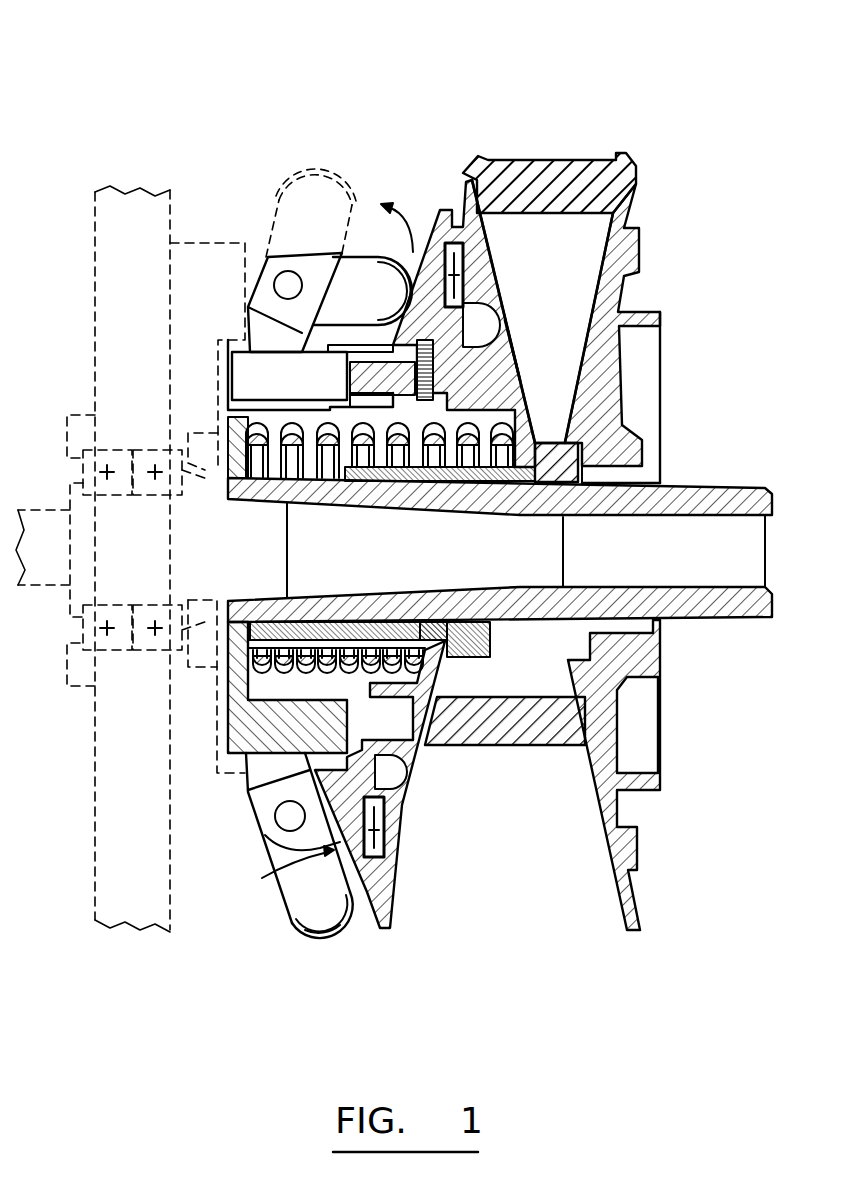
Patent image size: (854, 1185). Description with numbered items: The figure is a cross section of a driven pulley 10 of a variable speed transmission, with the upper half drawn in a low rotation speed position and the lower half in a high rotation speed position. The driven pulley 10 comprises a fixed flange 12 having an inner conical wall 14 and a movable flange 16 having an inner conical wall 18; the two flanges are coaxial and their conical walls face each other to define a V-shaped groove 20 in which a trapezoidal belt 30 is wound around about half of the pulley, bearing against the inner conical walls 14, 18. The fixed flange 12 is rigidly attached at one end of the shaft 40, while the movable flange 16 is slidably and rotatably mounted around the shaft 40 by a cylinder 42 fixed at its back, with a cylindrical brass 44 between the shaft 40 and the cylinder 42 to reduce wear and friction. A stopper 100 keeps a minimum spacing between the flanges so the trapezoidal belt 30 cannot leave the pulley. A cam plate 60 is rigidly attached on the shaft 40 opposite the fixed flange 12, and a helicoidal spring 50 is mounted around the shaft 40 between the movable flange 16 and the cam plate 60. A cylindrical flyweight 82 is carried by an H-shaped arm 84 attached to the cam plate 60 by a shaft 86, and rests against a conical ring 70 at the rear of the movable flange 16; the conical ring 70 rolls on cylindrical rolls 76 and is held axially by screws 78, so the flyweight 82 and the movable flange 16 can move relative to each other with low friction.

The driven pulley 10 is at (573, 72).
The fixed flange 12 is at (640, 180).
The inner conical wall 14 is at (618, 270).
The movable flange 16 is at (450, 210).
The inner conical wall 18 is at (513, 314).
The V-shaped groove 20 is at (567, 362).
The trapezoidal belt 30 is at (537, 160).
The shaft 40 is at (770, 488).
The cylinder 42 is at (460, 481).
The cylindrical brass 44 is at (443, 597).
The helicoidal spring 50 is at (318, 470).
The cam plate 60 is at (222, 640).
The conical ring 70 is at (418, 245).
The cylindrical rolls 76 is at (450, 241).
The screws 78 is at (502, 345).
The cylindrical flyweight 82 is at (392, 260).
The H-shaped arm 84 is at (389, 305).
The shaft 86 is at (280, 283).
The stopper 100 is at (497, 643).